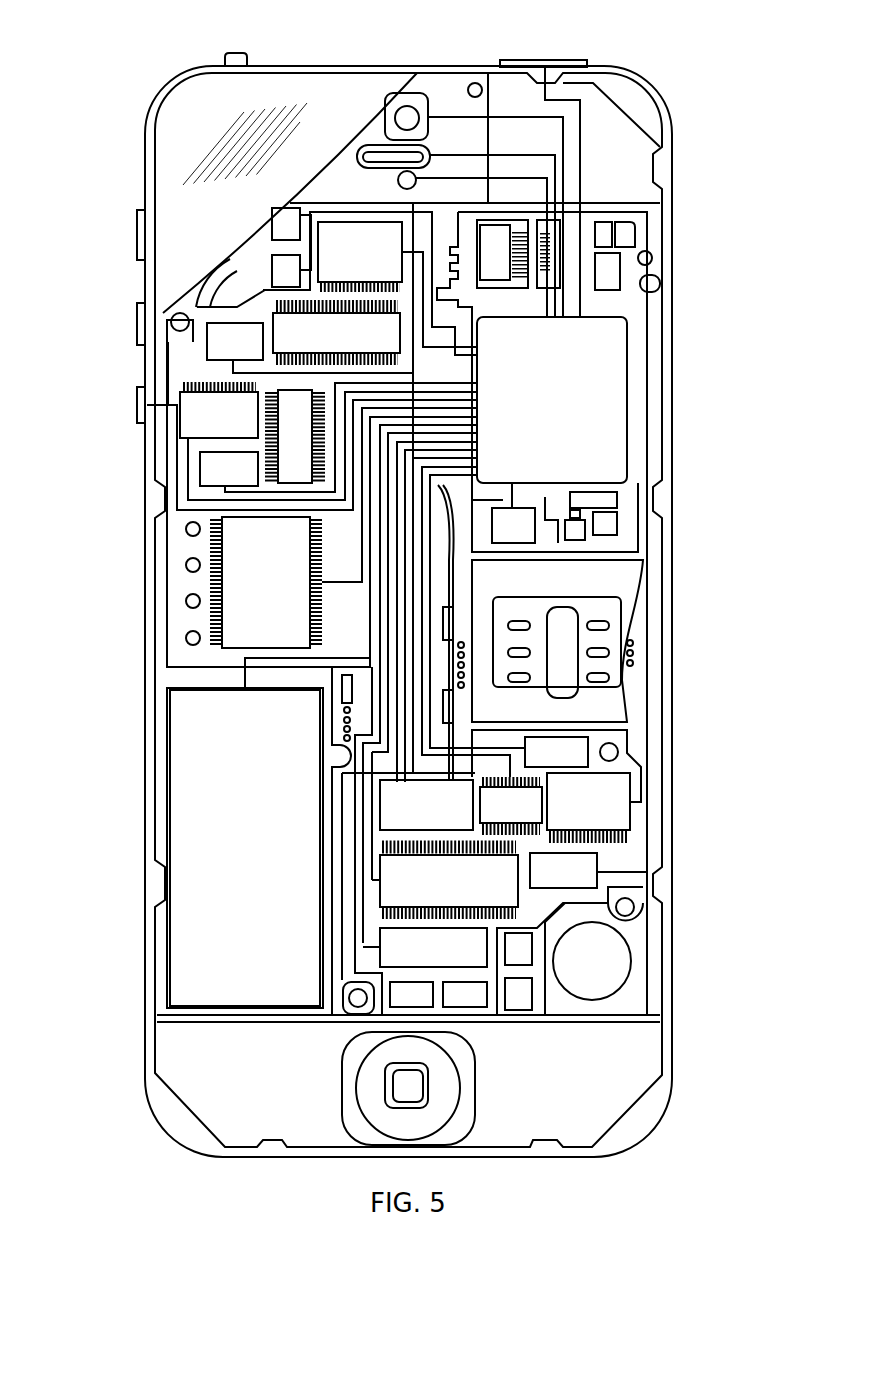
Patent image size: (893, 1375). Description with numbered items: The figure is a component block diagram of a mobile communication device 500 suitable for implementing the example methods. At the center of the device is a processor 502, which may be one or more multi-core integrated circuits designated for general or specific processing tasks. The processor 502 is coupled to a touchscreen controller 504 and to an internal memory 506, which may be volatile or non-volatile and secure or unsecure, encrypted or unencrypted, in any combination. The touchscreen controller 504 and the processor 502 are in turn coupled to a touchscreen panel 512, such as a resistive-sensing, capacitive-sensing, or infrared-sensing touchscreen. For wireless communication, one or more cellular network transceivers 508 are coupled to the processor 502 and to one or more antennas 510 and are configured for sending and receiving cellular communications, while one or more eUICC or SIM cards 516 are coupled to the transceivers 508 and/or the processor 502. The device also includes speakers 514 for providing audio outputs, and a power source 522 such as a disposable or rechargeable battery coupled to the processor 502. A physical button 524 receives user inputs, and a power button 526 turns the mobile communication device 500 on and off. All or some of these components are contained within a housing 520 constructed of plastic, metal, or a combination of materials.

The mobile communication device 500 is at (104, 52).
The processor 502 is at (572, 413).
The touchscreen controller 504 is at (379, 263).
The internal memory 506 is at (286, 587).
The cellular network transceiver 508 is at (577, 232).
The antenna 510 is at (613, 267).
The touchscreen panel 512 is at (183, 157).
The speaker 514 is at (363, 143).
The eUICC or SIM card 516 is at (576, 764).
The housing 520 is at (672, 1040).
The power source 522 is at (265, 855).
The physical button 524 is at (425, 1098).
The power button 526 is at (545, 62).